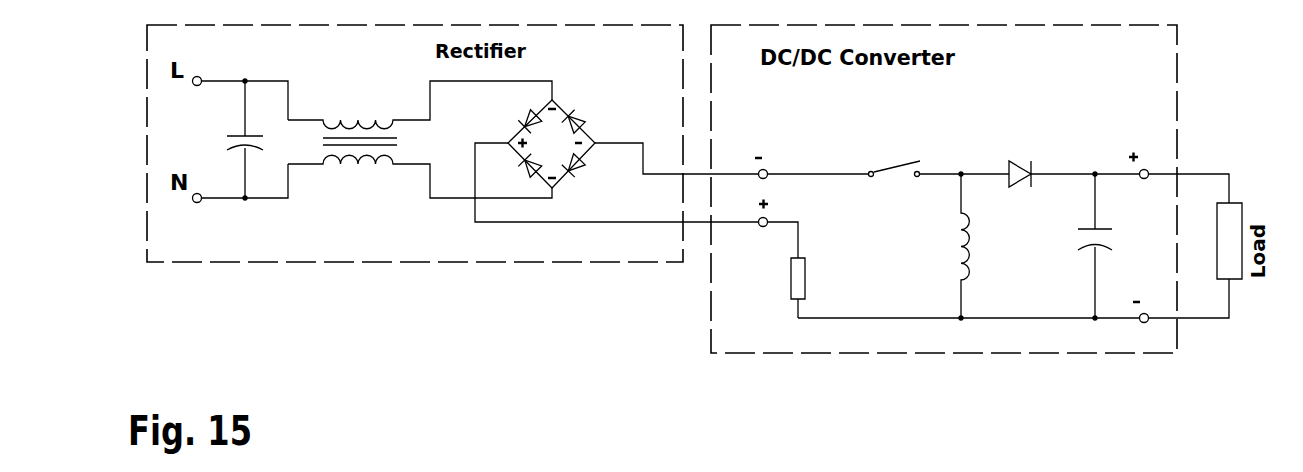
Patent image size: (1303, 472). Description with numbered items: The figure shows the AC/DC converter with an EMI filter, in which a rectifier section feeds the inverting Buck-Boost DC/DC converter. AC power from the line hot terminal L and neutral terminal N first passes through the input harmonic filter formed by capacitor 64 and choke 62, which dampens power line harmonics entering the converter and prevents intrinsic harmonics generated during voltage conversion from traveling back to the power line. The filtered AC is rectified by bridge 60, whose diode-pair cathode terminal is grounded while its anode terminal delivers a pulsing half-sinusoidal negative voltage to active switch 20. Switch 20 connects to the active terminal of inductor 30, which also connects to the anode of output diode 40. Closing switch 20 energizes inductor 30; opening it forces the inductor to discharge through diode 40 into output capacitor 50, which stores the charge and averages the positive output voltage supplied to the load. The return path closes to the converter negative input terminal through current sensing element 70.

The capacitor 64 is at (261, 120).
The choke 62 is at (360, 178).
The bridge 60 is at (589, 101).
The active switch 20 is at (897, 153).
The output diode 40 is at (1023, 160).
The inductor 30 is at (948, 242).
The output capacitor 50 is at (1066, 237).
The current sensing element 70 is at (782, 272).